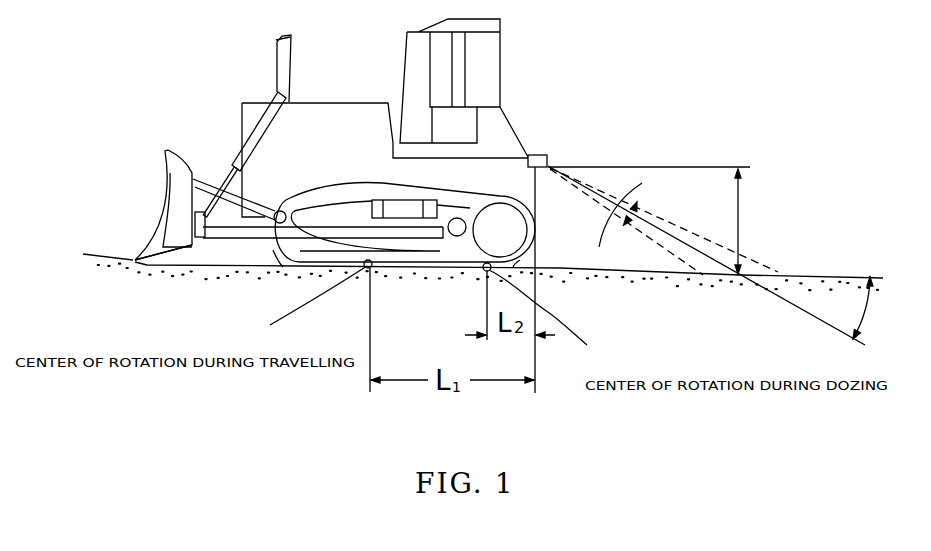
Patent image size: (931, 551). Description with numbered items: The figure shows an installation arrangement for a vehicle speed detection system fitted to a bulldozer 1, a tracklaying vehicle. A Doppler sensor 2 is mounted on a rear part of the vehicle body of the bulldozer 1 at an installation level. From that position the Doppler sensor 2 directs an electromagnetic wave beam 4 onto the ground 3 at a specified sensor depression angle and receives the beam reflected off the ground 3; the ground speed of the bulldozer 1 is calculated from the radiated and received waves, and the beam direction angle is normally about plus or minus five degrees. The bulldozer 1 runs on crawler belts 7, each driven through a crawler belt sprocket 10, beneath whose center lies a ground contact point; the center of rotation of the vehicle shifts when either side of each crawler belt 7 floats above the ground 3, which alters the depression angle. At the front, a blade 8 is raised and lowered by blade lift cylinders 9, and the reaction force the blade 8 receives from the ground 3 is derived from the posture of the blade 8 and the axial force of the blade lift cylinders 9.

The bulldozer 1 is at (485, 60).
The Doppler sensor 2 is at (541, 153).
The ground 3 is at (118, 256).
The electromagnetic wave beam 4 is at (717, 263).
The crawler belt 7 is at (427, 267).
The blade 8 is at (177, 233).
The blade lift cylinders 9 is at (253, 137).
The crawler belt sprocket 10 is at (513, 233).